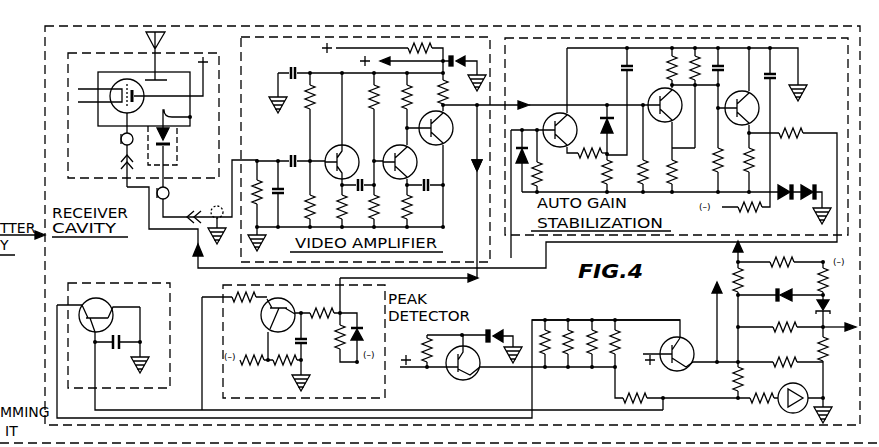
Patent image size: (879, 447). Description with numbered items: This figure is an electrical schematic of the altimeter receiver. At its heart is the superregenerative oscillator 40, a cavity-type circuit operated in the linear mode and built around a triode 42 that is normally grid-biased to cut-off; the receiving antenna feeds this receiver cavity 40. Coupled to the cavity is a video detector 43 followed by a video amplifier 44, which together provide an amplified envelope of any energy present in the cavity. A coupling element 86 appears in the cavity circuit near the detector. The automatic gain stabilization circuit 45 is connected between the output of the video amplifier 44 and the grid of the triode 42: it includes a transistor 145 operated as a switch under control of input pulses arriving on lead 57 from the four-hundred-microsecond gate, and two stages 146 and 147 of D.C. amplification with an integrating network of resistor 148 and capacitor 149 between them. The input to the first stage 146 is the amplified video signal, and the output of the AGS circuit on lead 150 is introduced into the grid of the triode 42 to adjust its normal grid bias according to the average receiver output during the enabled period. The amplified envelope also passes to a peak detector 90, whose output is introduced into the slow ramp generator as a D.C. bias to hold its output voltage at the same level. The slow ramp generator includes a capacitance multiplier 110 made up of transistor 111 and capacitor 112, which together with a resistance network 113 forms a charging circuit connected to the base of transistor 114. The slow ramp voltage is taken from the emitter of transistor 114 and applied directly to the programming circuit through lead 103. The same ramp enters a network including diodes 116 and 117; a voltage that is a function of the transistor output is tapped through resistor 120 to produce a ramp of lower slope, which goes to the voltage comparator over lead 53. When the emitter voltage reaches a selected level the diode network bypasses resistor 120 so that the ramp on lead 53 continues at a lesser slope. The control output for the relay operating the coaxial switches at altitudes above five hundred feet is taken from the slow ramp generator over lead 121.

The superregenerative oscillator 40 is at (66, 128).
The triode 42 is at (127, 72).
The video detector 43 is at (171, 135).
The video amplifier 44 is at (243, 60).
The automatic gain stabilization circuit 45 is at (507, 80).
The lead 53 is at (838, 330).
The lead 57 is at (511, 258).
The coupling element 86 is at (170, 191).
The peak detector 90 is at (223, 337).
The lead 103 is at (716, 296).
The capacitance multiplier 110 is at (96, 283).
The transistor 111 is at (104, 300).
The capacitor 112 is at (120, 338).
The resistance network 113 is at (613, 320).
The transistor 114 is at (678, 338).
The diode 116 is at (789, 293).
The diode 117 is at (817, 310).
The resistor 120 is at (785, 330).
The lead 121 is at (735, 252).
The transistor 145 is at (548, 113).
The first D.C. amplification stage 146 is at (649, 100).
The second D.C. amplification stage 147 is at (762, 95).
The resistor 148 is at (668, 66).
The capacitor 149 is at (725, 62).
The lead 150 is at (127, 186).